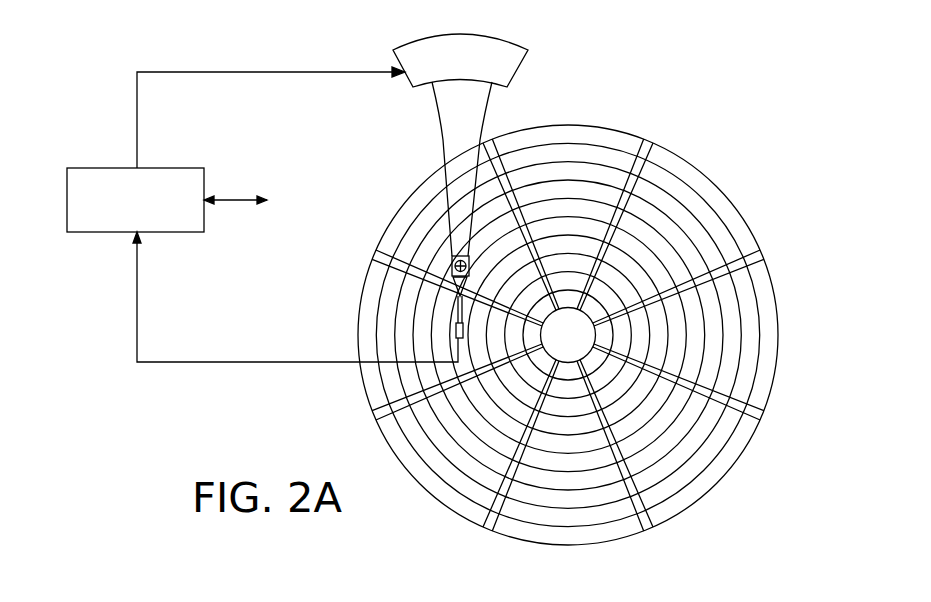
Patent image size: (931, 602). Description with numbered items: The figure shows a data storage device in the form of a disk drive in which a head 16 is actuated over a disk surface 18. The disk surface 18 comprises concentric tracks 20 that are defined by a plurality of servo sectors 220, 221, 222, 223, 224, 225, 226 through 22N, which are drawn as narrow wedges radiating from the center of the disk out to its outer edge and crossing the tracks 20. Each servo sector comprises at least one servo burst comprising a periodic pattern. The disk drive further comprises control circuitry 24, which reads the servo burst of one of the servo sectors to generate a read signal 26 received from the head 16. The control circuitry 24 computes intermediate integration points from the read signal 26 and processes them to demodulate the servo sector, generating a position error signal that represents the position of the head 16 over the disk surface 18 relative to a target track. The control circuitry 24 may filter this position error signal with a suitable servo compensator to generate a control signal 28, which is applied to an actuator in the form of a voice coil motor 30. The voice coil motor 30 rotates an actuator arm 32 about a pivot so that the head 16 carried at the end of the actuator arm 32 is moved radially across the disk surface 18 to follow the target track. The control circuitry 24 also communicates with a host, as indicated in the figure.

The head 16 is at (456, 330).
The disk surface 18 is at (712, 172).
The tracks 20 is at (568, 155).
The servo sector 220 is at (649, 148).
The servo sector 221 is at (754, 260).
The servo sector 222 is at (756, 413).
The servo sector 223 is at (643, 521).
The servo sector 224 is at (488, 520).
The servo sector 225 is at (380, 410).
The servo sector 226 is at (384, 254).
The servo sector 22N is at (496, 148).
The control circuitry 24 is at (173, 168).
The read signal 26 is at (223, 362).
The control signal 28 is at (137, 113).
The voice coil motor 30 is at (413, 82).
The actuator arm 32 is at (443, 151).